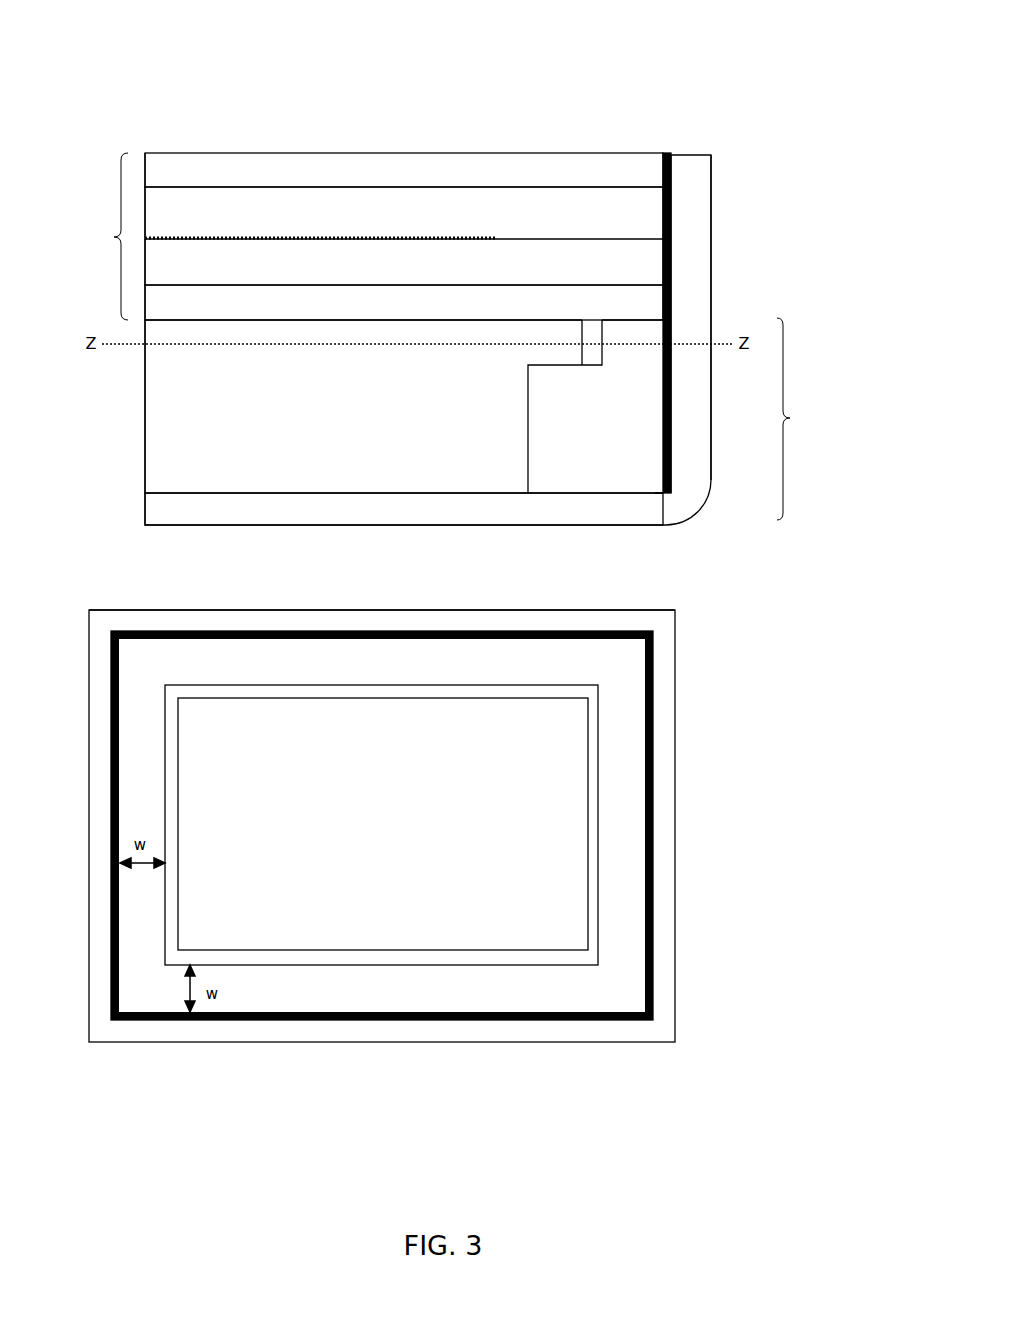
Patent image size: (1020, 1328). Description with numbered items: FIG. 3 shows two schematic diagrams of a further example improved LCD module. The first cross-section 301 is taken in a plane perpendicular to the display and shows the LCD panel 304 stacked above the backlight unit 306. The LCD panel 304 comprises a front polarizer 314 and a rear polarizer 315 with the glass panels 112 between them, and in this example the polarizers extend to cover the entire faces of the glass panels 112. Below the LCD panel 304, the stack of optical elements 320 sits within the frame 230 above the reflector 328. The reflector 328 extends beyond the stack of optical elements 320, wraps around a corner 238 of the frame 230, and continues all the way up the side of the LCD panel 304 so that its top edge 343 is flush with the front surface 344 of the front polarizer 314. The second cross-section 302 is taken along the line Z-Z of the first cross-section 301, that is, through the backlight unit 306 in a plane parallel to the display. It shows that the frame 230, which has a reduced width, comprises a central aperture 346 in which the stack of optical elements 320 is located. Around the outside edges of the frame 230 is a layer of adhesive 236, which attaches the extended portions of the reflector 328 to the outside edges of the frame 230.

The first cross-section 301 is at (698, 44).
The second cross-section 302 is at (723, 655).
The LCD panel 304 is at (78, 236).
The backlight unit 306 is at (820, 419).
The front polarizer 314 is at (404, 170).
The glass panel 112 is at (404, 236).
The rear polarizer 315 is at (404, 302).
The front surface 344 is at (622, 151).
The top edge 343 is at (693, 152).
The stack of optical elements 320 is at (404, 642).
The frame 230 is at (389, 668).
The corner 238 is at (662, 491).
The reflector 328 is at (382, 767).
The adhesive 236 is at (653, 781).
The central aperture 346 is at (590, 893).